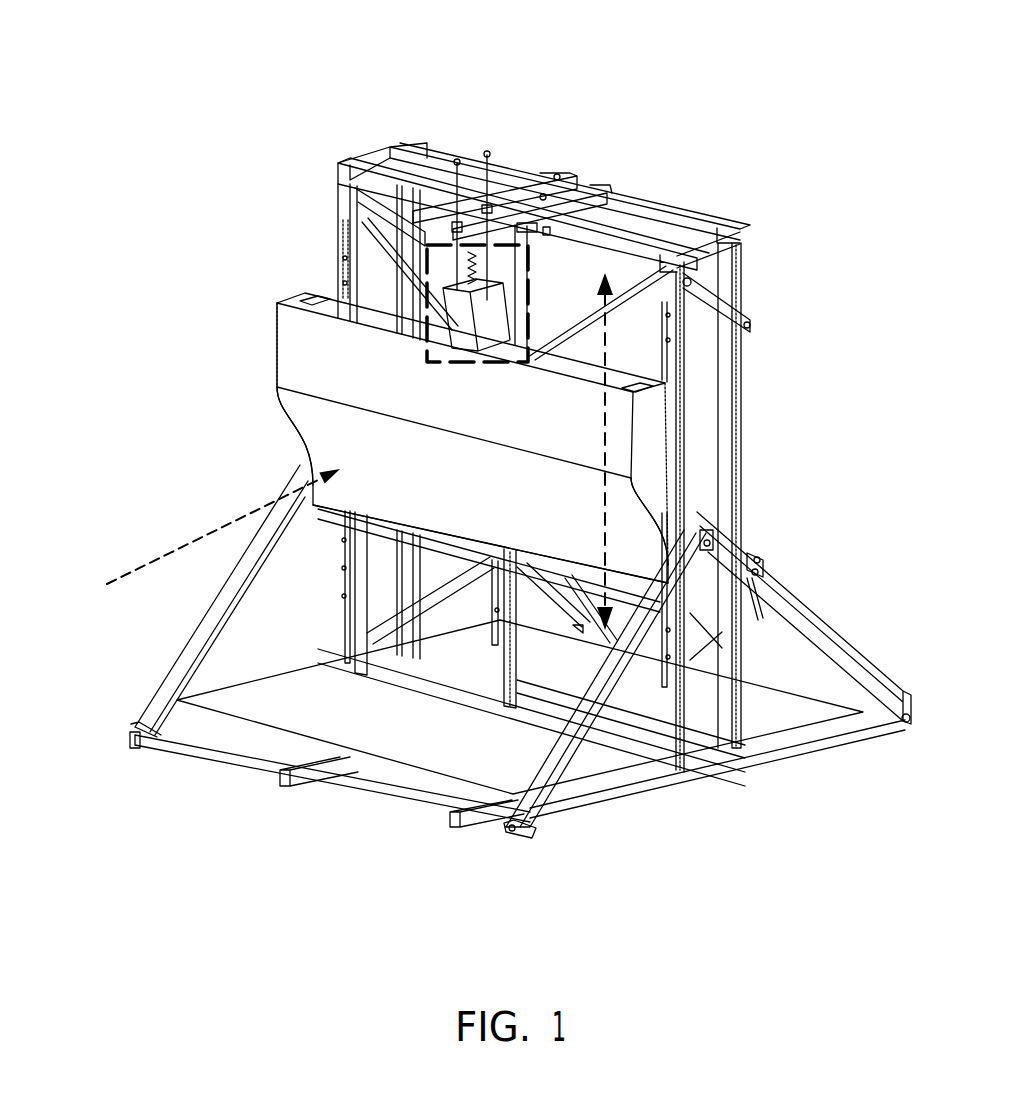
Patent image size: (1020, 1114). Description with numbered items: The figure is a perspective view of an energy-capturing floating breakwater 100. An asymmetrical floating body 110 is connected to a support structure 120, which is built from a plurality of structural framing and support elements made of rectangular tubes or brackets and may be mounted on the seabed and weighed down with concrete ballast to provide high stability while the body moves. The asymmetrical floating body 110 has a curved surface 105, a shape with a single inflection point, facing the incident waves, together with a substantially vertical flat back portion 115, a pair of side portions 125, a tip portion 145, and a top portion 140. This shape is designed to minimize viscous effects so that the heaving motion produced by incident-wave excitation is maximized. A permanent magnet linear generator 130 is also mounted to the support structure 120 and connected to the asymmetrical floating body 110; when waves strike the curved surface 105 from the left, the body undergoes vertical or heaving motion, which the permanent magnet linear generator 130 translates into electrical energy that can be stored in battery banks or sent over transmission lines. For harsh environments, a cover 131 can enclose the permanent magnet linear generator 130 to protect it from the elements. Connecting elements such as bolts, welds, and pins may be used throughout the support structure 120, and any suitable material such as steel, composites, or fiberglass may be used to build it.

The energy-capturing floating breakwater 100 is at (178, 56).
The curved surface 105 is at (293, 413).
The asymmetrical floating body 110 is at (474, 484).
The substantially vertical flat back portion 115 is at (669, 446).
The support structure 120 is at (378, 180).
The side portions 125 is at (276, 317).
The permanent magnet linear generator 130 is at (505, 303).
The cover 131 is at (506, 314).
The top portion 140 is at (362, 313).
The tip portion 145 is at (333, 518).